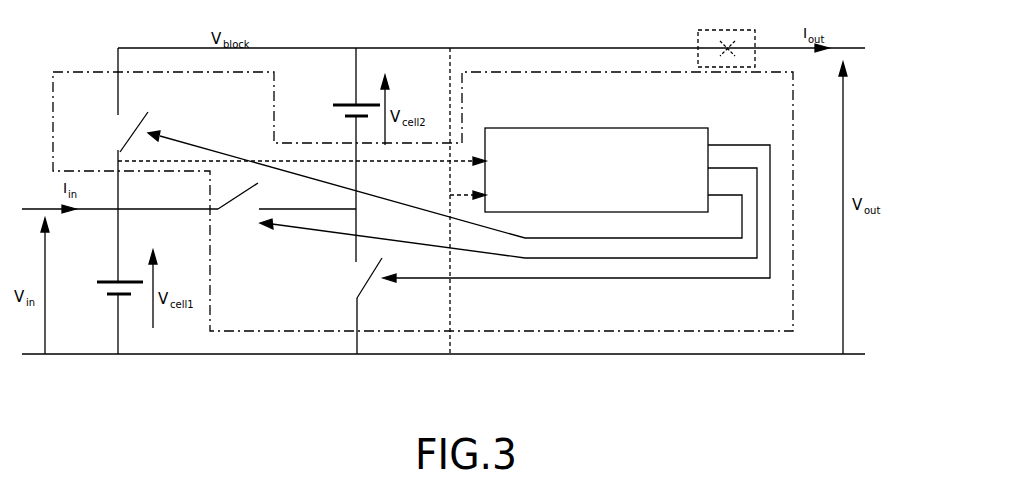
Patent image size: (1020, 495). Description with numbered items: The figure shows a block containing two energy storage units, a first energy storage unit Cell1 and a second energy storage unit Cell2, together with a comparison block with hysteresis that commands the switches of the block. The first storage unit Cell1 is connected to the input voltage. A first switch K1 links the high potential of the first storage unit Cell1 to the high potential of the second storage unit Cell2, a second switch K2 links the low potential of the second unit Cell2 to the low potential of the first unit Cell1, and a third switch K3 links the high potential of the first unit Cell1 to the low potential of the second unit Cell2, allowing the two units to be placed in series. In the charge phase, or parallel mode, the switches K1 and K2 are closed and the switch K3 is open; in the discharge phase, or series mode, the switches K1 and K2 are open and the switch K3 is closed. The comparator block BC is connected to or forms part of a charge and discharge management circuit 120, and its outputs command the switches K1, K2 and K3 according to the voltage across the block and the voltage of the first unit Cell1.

The charge and discharge management circuit 120 is at (793, 160).
The first switch K1 is at (117, 128).
The second switch K2 is at (350, 281).
The third switch K3 is at (285, 215).
The comparator block BC is at (607, 128).
The first energy storage unit Cell1 is at (105, 281).
The second energy storage unit Cell2 is at (338, 128).